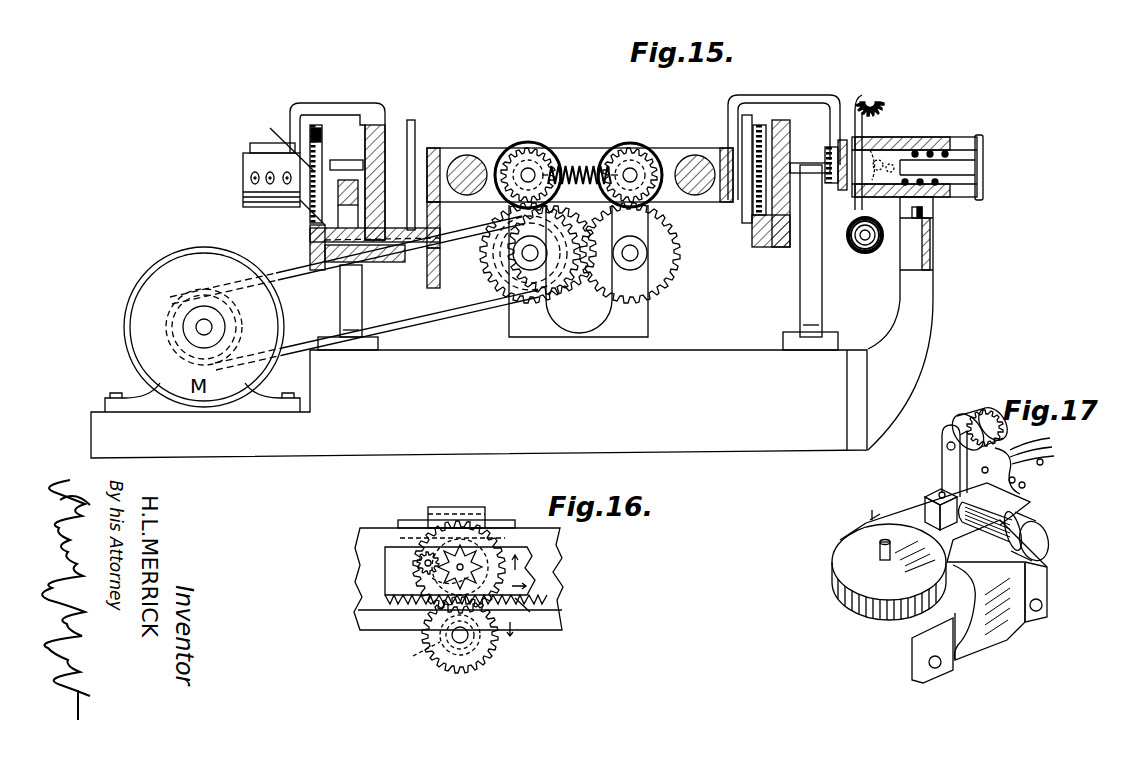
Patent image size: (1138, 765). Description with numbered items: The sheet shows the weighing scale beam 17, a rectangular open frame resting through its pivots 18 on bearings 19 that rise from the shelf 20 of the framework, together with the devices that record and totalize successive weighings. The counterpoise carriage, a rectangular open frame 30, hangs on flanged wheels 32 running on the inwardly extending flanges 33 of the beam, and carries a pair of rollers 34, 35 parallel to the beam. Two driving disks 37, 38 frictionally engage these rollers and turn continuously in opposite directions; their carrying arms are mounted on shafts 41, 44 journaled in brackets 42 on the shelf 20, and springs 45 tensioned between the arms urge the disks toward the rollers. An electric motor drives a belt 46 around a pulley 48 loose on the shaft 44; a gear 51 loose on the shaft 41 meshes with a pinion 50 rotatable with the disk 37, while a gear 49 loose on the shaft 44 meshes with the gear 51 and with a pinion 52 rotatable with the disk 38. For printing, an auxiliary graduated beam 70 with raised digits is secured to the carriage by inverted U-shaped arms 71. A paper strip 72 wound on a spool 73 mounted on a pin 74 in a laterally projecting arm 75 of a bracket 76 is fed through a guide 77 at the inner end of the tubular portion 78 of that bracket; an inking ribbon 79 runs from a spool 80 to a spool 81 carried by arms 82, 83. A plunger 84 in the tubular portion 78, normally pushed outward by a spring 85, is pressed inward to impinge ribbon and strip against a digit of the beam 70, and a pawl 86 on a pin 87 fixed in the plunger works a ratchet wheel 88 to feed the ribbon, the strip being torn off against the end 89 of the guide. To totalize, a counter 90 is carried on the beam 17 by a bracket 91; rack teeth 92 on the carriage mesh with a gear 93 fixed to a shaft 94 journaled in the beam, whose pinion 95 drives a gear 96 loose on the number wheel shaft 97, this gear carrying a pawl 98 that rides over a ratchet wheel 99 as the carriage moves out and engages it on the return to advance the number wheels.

In FIG. 15, the weighing or scale beam 17 is at (783, 243).
In FIG. 16, the weighing or scale beam 17 is at (556, 580).
In FIG. 15, the pivots 18 is at (344, 160).
In FIG. 15, the bearings 19 is at (362, 295).
In FIG. 15, the shelf 20 is at (479, 404).
In FIG. 15, the rectangular open frame 30 is at (725, 148).
In FIG. 16, the rectangular open frame 30 is at (520, 562).
In FIG. 15, the flanged wheels 32 is at (415, 128).
In FIG. 15, the inwardly extending flanges 33 is at (765, 240).
In FIG. 15, the roller 34 is at (470, 155).
In FIG. 15, the roller 35 is at (690, 156).
In FIG. 15, the driving disk 37 is at (525, 142).
In FIG. 15, the driving disk 38 is at (630, 143).
In FIG. 15, the shaft 41 is at (522, 252).
In FIG. 15, the brackets 42 is at (578, 271).
In FIG. 15, the shaft 44 is at (638, 253).
In FIG. 15, the springs 45 is at (580, 164).
In FIG. 15, the belt 46 is at (420, 306).
In FIG. 15, the pulley 48 is at (546, 292).
In FIG. 15, the gear 49 is at (665, 280).
In FIG. 15, the pinion 50 is at (537, 155).
In FIG. 15, the gear 51 is at (498, 284).
In FIG. 15, the pinion 52 is at (645, 156).
In FIG. 15, the auxiliary graduated beam 70 is at (830, 147).
In FIG. 15, the laterally extending arms 71 is at (778, 95).
In FIG. 17, the strip or web of paper 72 is at (866, 523).
In FIG. 17, the spool 73 is at (889, 572).
In FIG. 15, the pin 74 is at (923, 211).
In FIG. 17, the pin 74 is at (883, 542).
In FIG. 15, the laterally projecting arm 75 is at (932, 248).
In FIG. 17, the laterally projecting arm 75 is at (940, 570).
In FIG. 15, the bracket 76 is at (920, 309).
In FIG. 17, the bracket 76 is at (979, 601).
In FIG. 17, the guide 77 is at (898, 505).
In FIG. 15, the tubular portion 78 is at (930, 140).
In FIG. 17, the tubular portion 78 is at (1012, 512).
In FIG. 15, the inking ribbon 79 is at (853, 105).
In FIG. 17, the inking ribbon 79 is at (942, 462).
In FIG. 15, the spool 80 is at (867, 253).
In FIG. 15, the spool 81 is at (872, 88).
In FIG. 17, the spool 81 is at (958, 418).
In FIG. 17, the arm 82 is at (962, 532).
In FIG. 15, the arm 83 is at (888, 137).
In FIG. 17, the arm 83 is at (998, 450).
In FIG. 15, the plunger 84 is at (983, 150).
In FIG. 17, the plunger 84 is at (1049, 538).
In FIG. 15, the spring 85 is at (952, 150).
In FIG. 15, the pawl 86 is at (896, 150).
In FIG. 17, the pawl 86 is at (1044, 464).
In FIG. 15, the pin 87 is at (900, 178).
In FIG. 17, the pin 87 is at (1026, 486).
In FIG. 15, the ratchet wheel 88 is at (882, 100).
In FIG. 17, the ratchet wheel 88 is at (985, 410).
In FIG. 17, the end of the guide 89 is at (1045, 451).
In FIG. 15, the counter 90 is at (243, 178).
In FIG. 16, the counter 90 is at (508, 542).
In FIG. 15, the bracket 91 is at (350, 103).
In FIG. 16, the bracket 91 is at (462, 507).
In FIG. 15, the rack teeth 92 is at (440, 205).
In FIG. 16, the rack teeth 92 is at (517, 605).
In FIG. 15, the gear 93 is at (440, 270).
In FIG. 16, the gear 93 is at (486, 662).
In FIG. 15, the shaft 94 is at (400, 250).
In FIG. 16, the shaft 94 is at (456, 640).
In FIG. 15, the pinion 95 is at (310, 236).
In FIG. 16, the pinion 95 is at (411, 656).
In FIG. 15, the gear 96 is at (310, 215).
In FIG. 16, the gear 96 is at (425, 592).
In FIG. 15, the number wheel shaft 97 is at (300, 205).
In FIG. 16, the number wheel shaft 97 is at (462, 565).
In FIG. 15, the pawl 98 is at (312, 140).
In FIG. 16, the pawl 98 is at (420, 550).
In FIG. 15, the ratchet wheel 99 is at (279, 139).
In FIG. 16, the ratchet wheel 99 is at (426, 578).